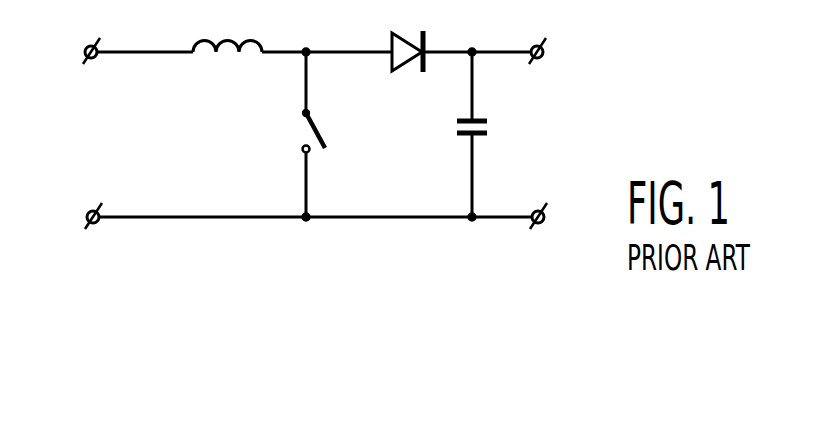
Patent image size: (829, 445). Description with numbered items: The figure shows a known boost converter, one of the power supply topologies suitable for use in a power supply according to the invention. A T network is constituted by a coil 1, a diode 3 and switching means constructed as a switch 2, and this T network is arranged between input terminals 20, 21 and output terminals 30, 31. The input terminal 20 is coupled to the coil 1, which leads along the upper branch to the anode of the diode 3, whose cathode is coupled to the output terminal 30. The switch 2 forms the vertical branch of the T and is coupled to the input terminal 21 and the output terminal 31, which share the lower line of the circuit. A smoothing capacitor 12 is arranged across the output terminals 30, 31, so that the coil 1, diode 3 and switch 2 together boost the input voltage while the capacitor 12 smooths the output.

The coil 1 is at (228, 37).
The switch 2 is at (301, 128).
The diode 3 is at (408, 33).
The smoothing capacitor 12 is at (486, 117).
The input terminal 20 is at (87, 47).
The input terminal 21 is at (88, 212).
The output terminal 30 is at (543, 51).
The output terminal 31 is at (544, 212).